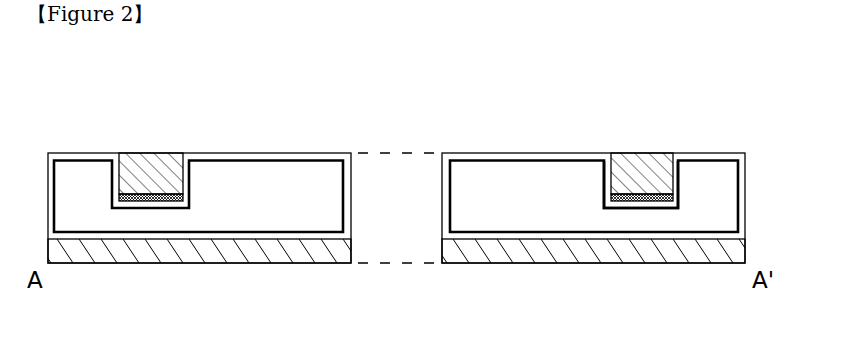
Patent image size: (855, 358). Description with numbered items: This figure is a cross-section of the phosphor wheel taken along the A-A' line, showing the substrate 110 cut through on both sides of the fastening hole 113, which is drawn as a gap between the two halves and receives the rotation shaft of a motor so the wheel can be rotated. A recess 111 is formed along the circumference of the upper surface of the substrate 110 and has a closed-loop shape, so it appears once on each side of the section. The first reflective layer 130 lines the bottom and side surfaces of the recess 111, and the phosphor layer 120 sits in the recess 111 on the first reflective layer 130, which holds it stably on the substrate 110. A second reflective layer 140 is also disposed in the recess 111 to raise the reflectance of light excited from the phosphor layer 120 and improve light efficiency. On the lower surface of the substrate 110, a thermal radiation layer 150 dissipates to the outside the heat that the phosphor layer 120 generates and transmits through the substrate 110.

The substrate 110 is at (269, 173).
The recess 111 is at (590, 178).
The fastening hole 113 is at (394, 160).
The phosphor layer 120 is at (150, 153).
The first reflective layer 130 is at (223, 158).
The second reflective layer 140 is at (640, 190).
The thermal radiation layer 150 is at (253, 253).